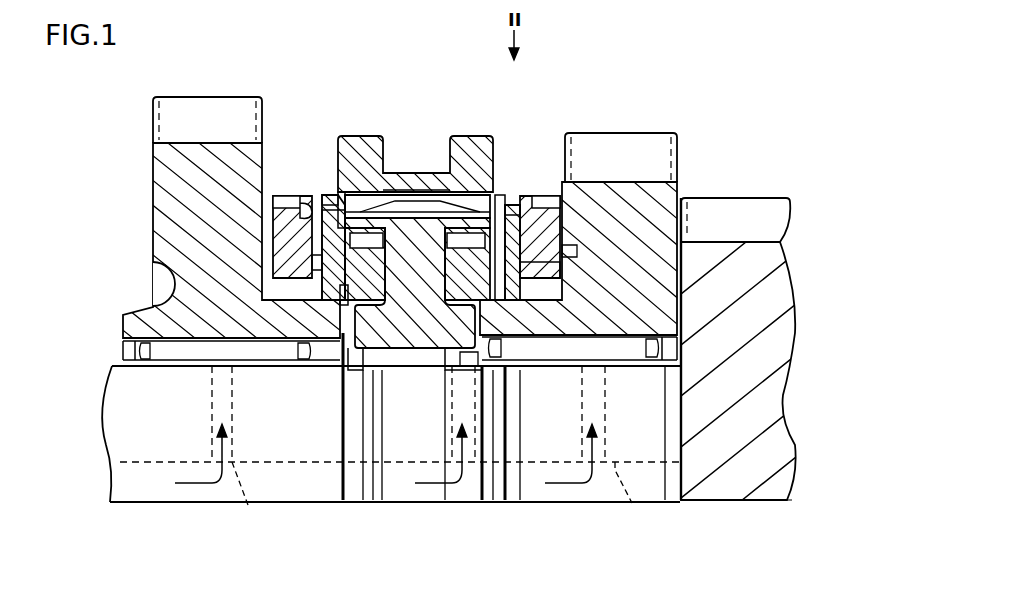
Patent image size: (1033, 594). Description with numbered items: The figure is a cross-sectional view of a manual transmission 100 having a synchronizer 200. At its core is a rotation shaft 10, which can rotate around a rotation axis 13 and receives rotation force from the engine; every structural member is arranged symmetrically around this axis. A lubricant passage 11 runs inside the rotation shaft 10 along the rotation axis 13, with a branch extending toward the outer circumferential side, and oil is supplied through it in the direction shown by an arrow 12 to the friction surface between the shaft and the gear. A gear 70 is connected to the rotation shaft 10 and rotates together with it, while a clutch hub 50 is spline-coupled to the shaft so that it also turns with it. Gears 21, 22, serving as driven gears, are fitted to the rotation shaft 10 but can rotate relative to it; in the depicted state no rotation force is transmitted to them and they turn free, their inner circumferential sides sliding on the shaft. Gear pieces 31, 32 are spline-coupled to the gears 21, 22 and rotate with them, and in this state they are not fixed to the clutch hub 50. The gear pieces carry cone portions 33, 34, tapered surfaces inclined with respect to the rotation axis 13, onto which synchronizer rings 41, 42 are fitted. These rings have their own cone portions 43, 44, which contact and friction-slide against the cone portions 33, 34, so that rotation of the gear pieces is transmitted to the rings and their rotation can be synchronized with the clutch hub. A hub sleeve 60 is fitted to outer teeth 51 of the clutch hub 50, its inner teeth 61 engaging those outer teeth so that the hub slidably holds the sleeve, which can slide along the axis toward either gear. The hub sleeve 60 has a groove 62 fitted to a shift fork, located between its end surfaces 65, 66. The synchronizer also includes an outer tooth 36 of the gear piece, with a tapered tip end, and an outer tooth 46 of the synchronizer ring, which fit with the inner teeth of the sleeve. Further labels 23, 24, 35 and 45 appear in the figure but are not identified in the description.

The manual transmission 100 is at (763, 97).
The synchronizer 200 is at (540, 72).
The rotation shaft 10 is at (650, 505).
The lubricant passage 11 is at (240, 505).
The arrow 12 is at (185, 505).
The rotation axis 13 is at (598, 505).
The gear 21 is at (185, 170).
The gear 22 is at (678, 183).
The first annular member 23 is at (272, 140).
The annular wall 24 is at (560, 250).
The gear piece 31 is at (300, 193).
The gear piece 32 is at (540, 266).
The cone portion 33 is at (322, 262).
The cone portion 34 is at (440, 200).
The recess 35 is at (282, 200).
The outer tooth 36 is at (547, 195).
The synchronizer ring 41 is at (345, 245).
The synchronizer ring 42 is at (460, 258).
The cone portion 43 is at (345, 292).
The cone portion 44 is at (490, 505).
The seal cavity 45 is at (318, 200).
The outer tooth 46 is at (513, 205).
The clutch hub 50 is at (410, 230).
The outer teeth 51 is at (403, 205).
The hub sleeve 60 is at (362, 150).
The inner teeth 61 is at (342, 198).
The groove 62 is at (390, 190).
The end surface 65 is at (328, 195).
The end surface 66 is at (505, 210).
The gear 70 is at (760, 352).